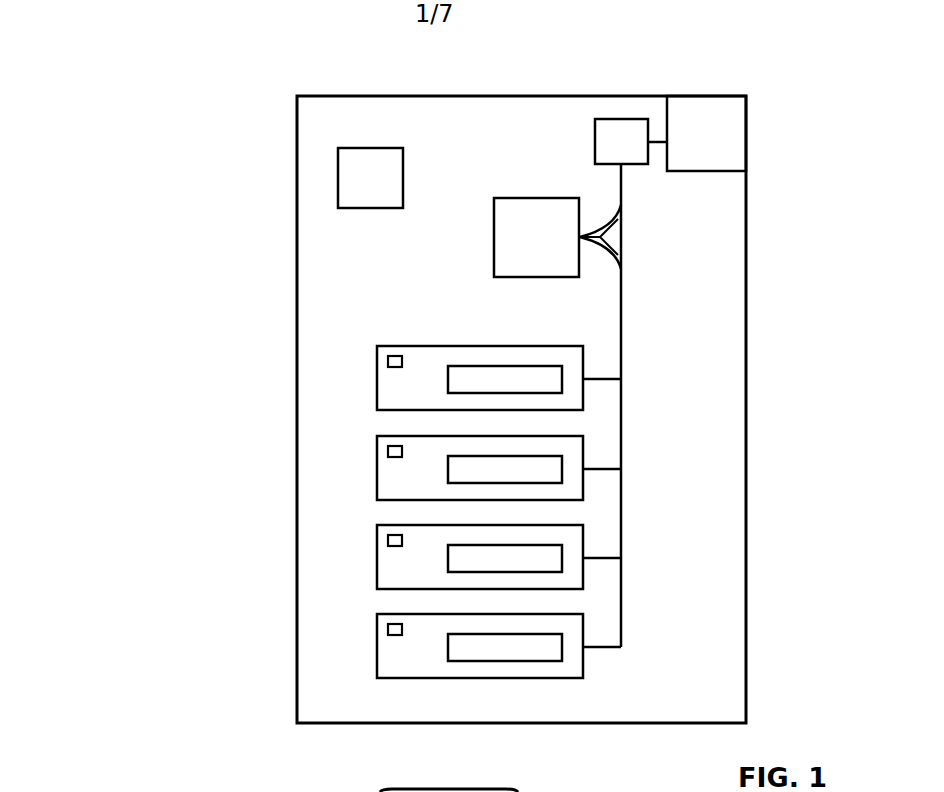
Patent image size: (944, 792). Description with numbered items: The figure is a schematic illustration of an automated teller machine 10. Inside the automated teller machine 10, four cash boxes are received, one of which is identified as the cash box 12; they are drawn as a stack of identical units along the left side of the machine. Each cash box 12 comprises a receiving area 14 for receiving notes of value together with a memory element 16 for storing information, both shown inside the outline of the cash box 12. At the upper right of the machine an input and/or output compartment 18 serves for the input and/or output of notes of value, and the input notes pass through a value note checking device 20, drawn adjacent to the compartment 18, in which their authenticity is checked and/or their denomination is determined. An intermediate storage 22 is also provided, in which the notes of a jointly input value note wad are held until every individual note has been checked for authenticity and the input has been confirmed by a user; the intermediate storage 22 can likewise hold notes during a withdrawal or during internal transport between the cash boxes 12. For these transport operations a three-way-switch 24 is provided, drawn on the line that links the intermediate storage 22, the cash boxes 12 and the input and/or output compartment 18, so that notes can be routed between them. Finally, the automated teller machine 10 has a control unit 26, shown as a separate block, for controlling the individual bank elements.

The automated teller machine 10 is at (116, 80).
The cash box 12 is at (573, 357).
The receiving area 14 is at (460, 379).
The memory element 16 is at (395, 362).
The input and/or output compartment 18 is at (723, 143).
The value note checking device 20 is at (620, 130).
The intermediate storage 22 is at (538, 213).
The three-way-switch 24 is at (614, 236).
The control unit 26 is at (366, 163).